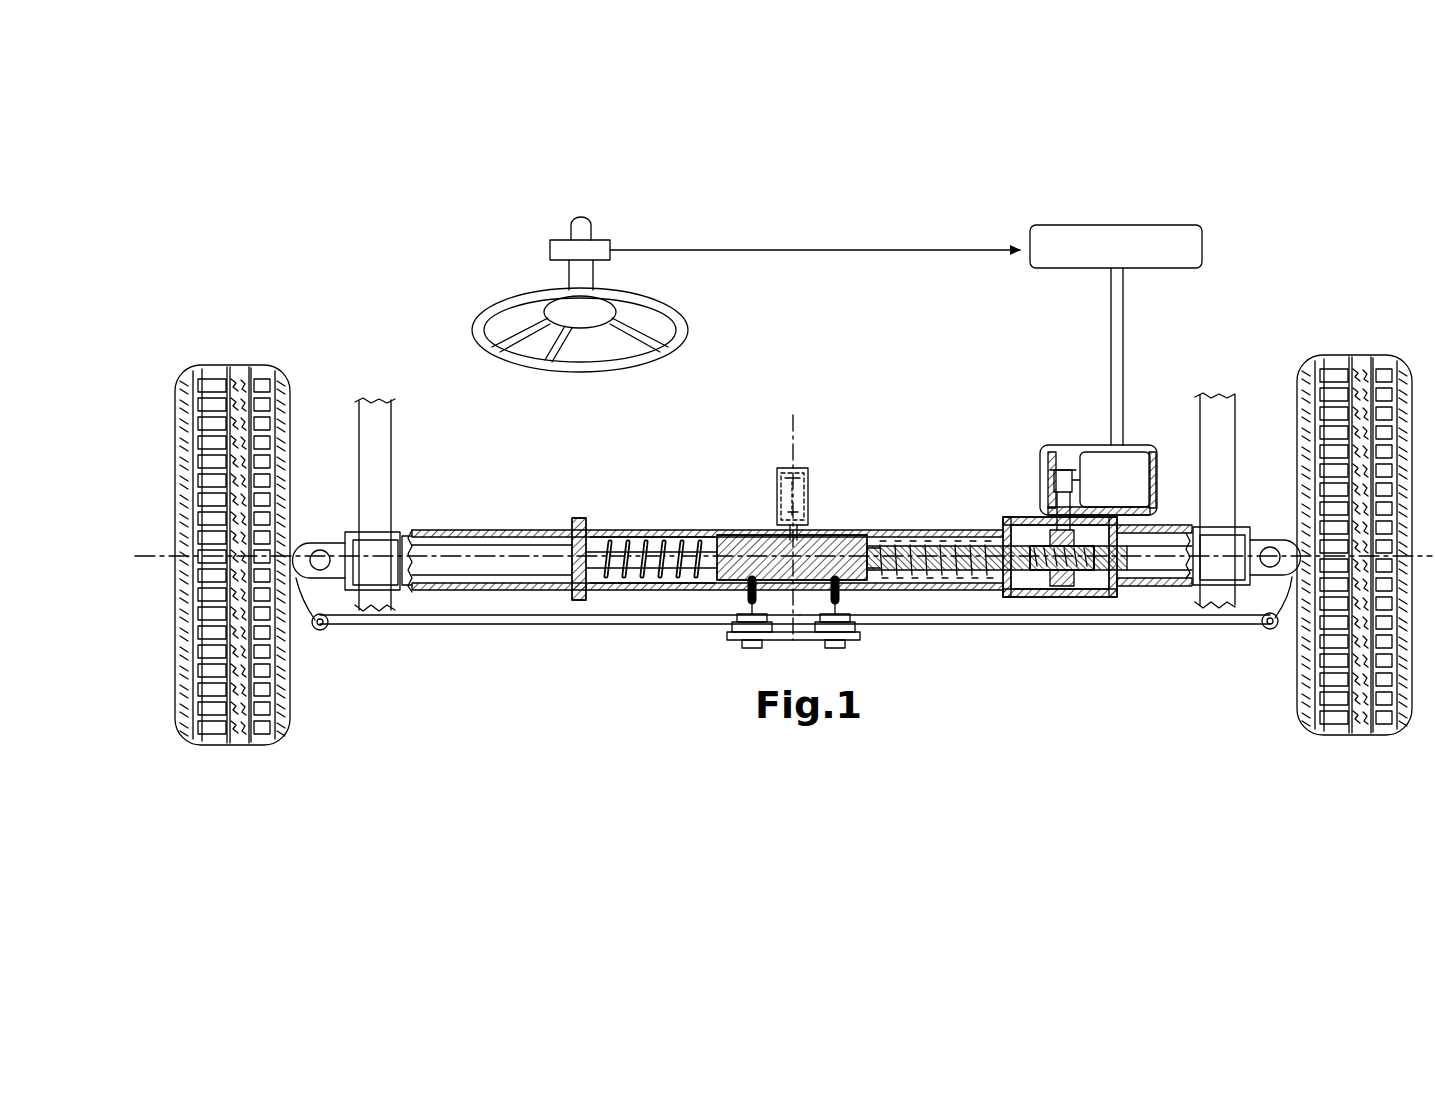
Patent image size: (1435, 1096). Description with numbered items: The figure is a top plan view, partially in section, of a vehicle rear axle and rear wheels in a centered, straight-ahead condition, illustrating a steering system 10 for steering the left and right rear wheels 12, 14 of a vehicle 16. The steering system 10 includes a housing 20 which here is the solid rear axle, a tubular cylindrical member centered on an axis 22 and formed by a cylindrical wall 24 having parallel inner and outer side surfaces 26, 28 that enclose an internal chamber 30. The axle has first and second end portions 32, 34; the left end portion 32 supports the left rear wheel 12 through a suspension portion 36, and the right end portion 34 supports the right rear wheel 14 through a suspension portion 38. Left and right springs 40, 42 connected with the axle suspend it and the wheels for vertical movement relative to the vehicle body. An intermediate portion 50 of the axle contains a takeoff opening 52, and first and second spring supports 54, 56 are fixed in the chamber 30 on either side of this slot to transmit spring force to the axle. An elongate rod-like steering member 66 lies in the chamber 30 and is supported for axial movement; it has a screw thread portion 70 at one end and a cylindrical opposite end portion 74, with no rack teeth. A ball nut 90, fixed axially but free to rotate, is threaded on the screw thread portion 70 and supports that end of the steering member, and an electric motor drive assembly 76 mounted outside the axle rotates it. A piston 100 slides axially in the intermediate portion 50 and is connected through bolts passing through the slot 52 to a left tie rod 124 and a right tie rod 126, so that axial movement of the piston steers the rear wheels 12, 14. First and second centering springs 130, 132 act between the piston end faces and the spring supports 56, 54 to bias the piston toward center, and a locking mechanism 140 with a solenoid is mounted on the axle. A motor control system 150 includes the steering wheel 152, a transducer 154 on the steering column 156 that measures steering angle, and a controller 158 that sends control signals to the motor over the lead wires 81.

The steering system 10 is at (351, 235).
The left rear wheel 12 is at (258, 742).
The right rear wheel 14 is at (1340, 705).
The vehicle 16 is at (311, 273).
The housing 20 is at (572, 520).
The axis 22 is at (152, 562).
The cylindrical wall 24 is at (500, 528).
The inner side surface 26 is at (480, 590).
The outer side surface 28 is at (490, 590).
The internal chamber 30 is at (636, 590).
The first end portion 32 is at (441, 486).
The second end portion 34 is at (1181, 650).
The suspension portion 36 is at (312, 545).
The suspension portion 38 is at (1292, 540).
The left spring 40 is at (372, 420).
The right spring 42 is at (1228, 420).
The intermediate portion 50 is at (622, 528).
The takeoff opening 52 is at (722, 597).
The first spring support 54 is at (1010, 597).
The second spring support 56 is at (568, 602).
The steering member 66 is at (906, 530).
The screw thread portion 70 is at (1135, 590).
The opposite end portion 74 is at (888, 610).
The electric motor drive assembly 76 is at (1040, 490).
The lead wires 81 is at (1112, 367).
The ball nut 90 is at (1058, 590).
The piston 100 is at (744, 530).
The left tie rod 124 is at (385, 626).
The right tie rod 126 is at (1222, 622).
The first centering spring 130 is at (668, 530).
The second centering spring 132 is at (962, 530).
The locking mechanism 140 is at (808, 485).
The motor control system 150 is at (1271, 133).
The steering wheel 152 is at (505, 355).
The transducer 154 is at (560, 250).
The steering column 156 is at (586, 222).
The controller 158 is at (1145, 230).